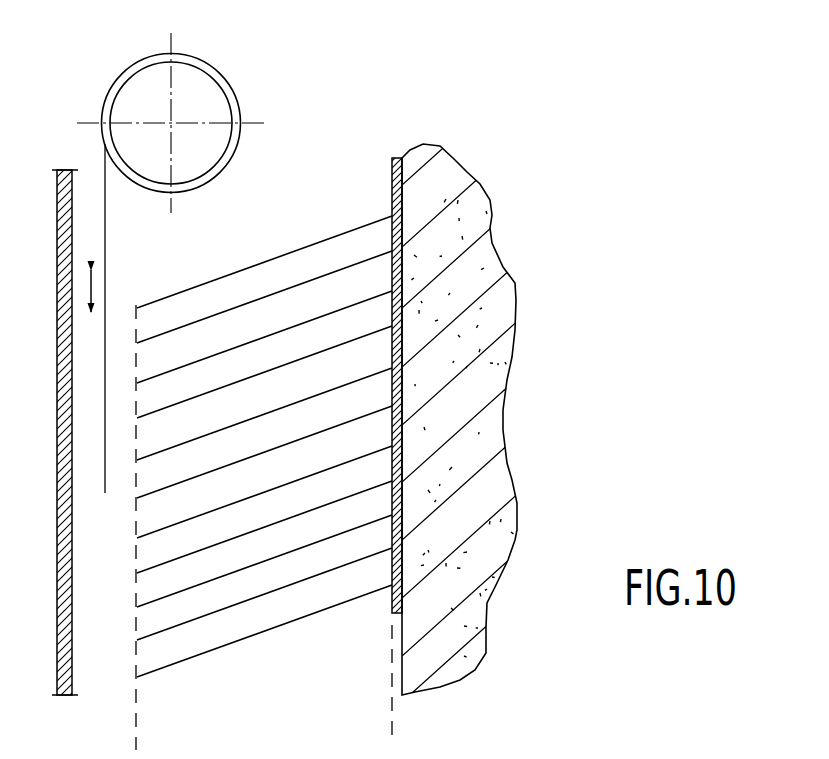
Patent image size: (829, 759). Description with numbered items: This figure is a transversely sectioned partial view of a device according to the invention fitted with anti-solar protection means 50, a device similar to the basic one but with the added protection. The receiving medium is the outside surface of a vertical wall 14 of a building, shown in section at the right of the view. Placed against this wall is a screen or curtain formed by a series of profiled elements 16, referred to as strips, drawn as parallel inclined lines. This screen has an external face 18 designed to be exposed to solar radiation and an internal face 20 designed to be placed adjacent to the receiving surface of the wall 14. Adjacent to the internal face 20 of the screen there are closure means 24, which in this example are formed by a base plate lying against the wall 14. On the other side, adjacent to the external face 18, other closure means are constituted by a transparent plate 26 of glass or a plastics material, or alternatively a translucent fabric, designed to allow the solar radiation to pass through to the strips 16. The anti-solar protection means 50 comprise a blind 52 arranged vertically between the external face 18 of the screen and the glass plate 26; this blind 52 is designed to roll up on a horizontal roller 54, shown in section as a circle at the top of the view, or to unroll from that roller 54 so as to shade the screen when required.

The vertical wall 14 is at (462, 445).
The profiled elements 16 is at (281, 325).
The external face 18 is at (137, 711).
The internal face 20 is at (392, 668).
The closure means 24 is at (392, 189).
The transparent plate 26 is at (66, 546).
The anti-solar protection means 50 is at (107, 84).
The blind 52 is at (103, 447).
The horizontal roller 54 is at (213, 101).